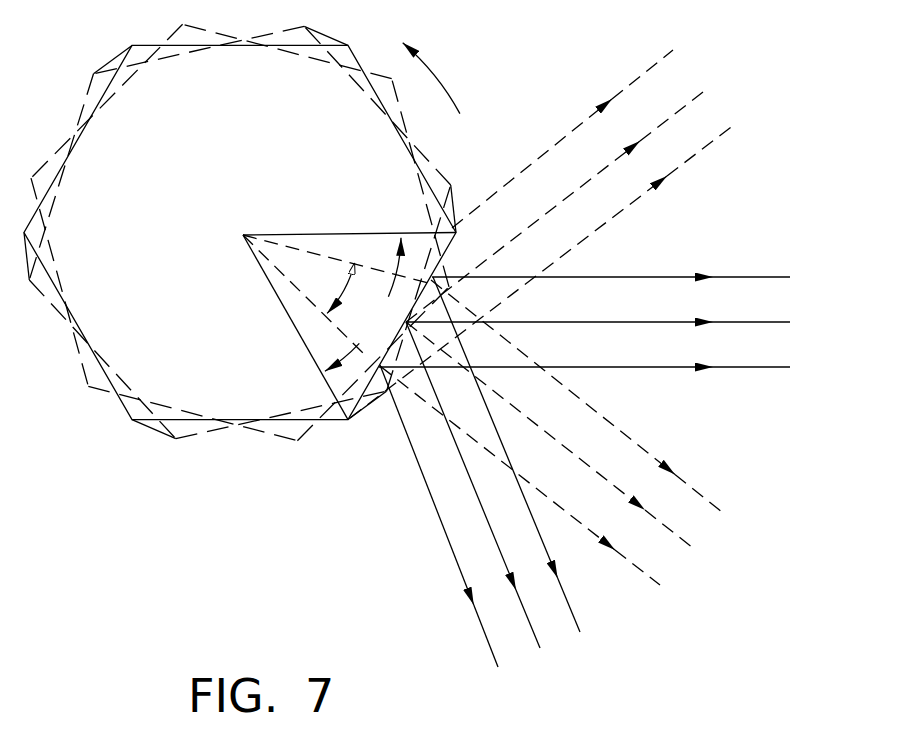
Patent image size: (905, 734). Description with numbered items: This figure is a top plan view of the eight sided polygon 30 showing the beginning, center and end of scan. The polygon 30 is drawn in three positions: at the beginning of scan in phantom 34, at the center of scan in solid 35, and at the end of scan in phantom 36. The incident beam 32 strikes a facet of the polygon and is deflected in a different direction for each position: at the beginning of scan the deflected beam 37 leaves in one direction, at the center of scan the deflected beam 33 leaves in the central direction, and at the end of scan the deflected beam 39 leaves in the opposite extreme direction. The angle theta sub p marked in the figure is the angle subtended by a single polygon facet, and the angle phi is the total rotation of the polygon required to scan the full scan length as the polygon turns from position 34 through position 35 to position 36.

The eight sided polygon 30 is at (85, 420).
The incident beam 32 is at (490, 492).
The center of scan deflected beam 33 is at (609, 324).
The beginning of scan polygon position 34 is at (300, 442).
The center of scan polygon position 35 is at (348, 420).
The end of scan polygon position 36 is at (458, 165).
The beginning of scan deflected beam 37 is at (565, 444).
The end of scan deflected beam 39 is at (549, 226).